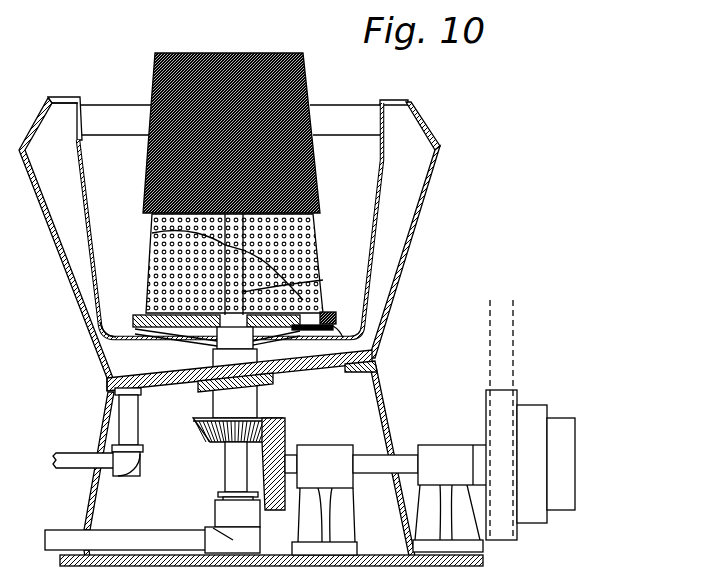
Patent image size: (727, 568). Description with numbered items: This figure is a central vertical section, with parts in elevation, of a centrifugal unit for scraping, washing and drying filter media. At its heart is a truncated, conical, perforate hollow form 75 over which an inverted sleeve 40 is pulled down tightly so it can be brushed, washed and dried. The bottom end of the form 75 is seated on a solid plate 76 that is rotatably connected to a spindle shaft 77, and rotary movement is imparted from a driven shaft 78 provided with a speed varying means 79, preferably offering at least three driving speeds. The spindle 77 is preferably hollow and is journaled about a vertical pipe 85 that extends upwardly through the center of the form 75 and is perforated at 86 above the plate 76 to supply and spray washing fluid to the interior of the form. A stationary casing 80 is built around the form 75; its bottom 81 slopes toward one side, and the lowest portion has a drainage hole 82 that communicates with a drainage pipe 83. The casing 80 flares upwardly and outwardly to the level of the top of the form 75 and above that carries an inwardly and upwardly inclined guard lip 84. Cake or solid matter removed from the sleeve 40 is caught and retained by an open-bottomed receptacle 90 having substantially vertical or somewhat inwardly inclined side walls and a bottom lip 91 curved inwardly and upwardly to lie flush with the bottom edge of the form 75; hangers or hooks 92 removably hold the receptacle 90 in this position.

The inverted sleeve 40 is at (256, 53).
The hangers or hooks 92 is at (82, 110).
The guard lip 84 is at (428, 125).
The open-bottomed receptacle 90 is at (378, 207).
The stationary casing 80 is at (424, 206).
The truncated conical perforate hollow form 75 is at (316, 245).
The perforations of the vertical pipe 86 is at (318, 282).
The bottom lip 91 is at (118, 335).
The drainage hole 82 is at (114, 392).
The solid plate 76 is at (188, 330).
The casing bottom 81 is at (168, 388).
The drainage pipe 83 is at (58, 453).
The spindle shaft 77 is at (258, 396).
The vertical pipe 85 is at (234, 448).
The driven shaft 78 is at (400, 454).
The speed varying means 79 is at (535, 405).